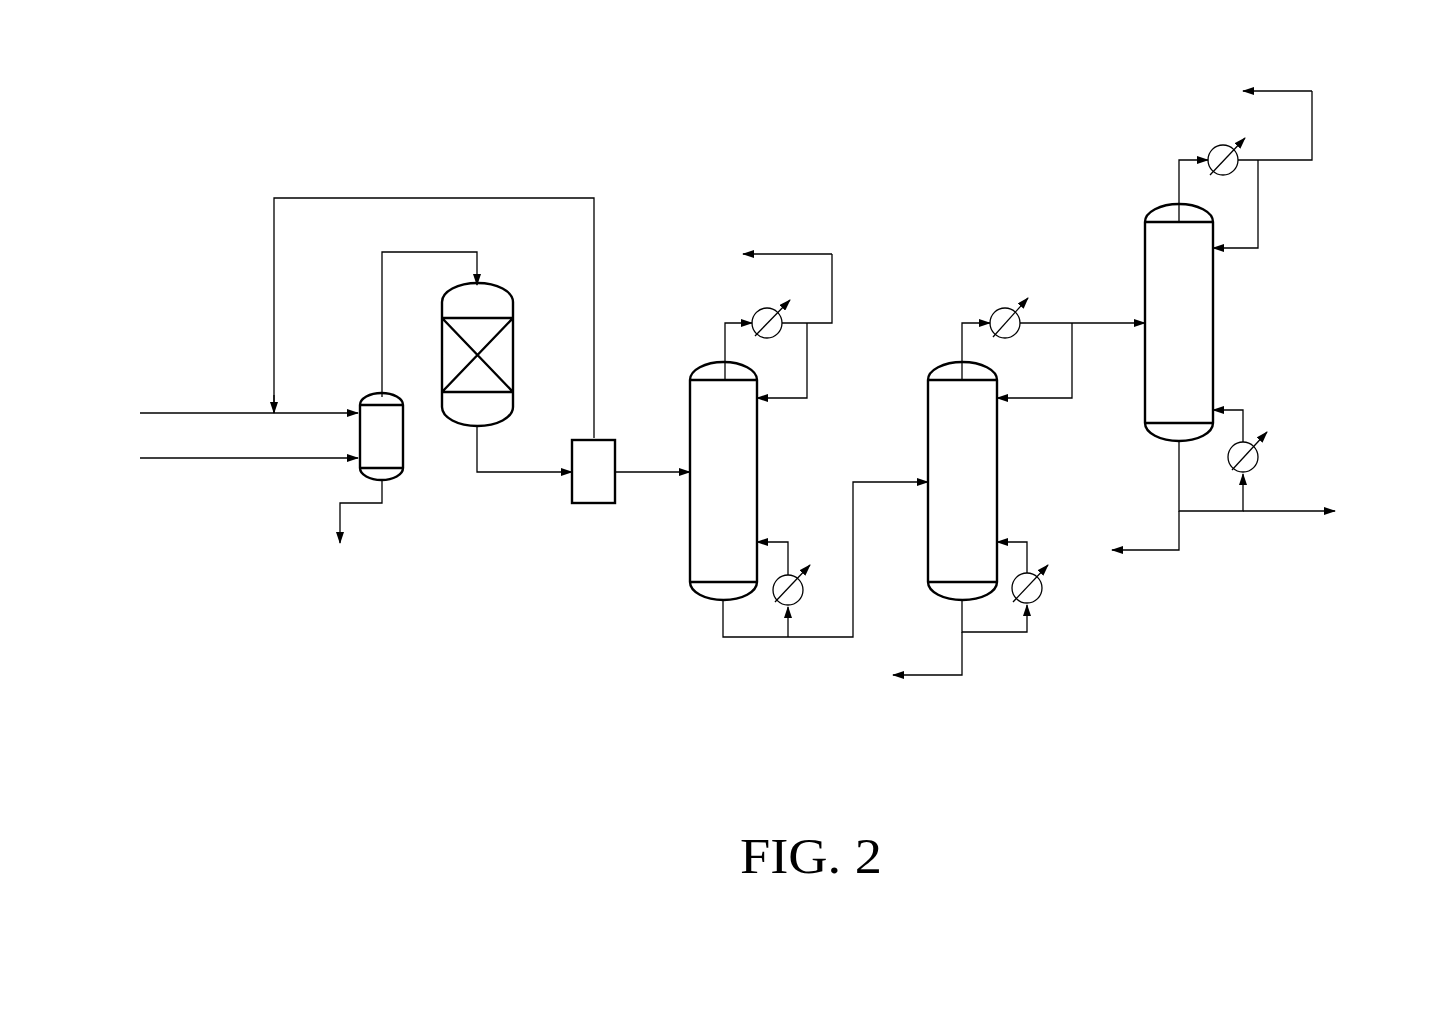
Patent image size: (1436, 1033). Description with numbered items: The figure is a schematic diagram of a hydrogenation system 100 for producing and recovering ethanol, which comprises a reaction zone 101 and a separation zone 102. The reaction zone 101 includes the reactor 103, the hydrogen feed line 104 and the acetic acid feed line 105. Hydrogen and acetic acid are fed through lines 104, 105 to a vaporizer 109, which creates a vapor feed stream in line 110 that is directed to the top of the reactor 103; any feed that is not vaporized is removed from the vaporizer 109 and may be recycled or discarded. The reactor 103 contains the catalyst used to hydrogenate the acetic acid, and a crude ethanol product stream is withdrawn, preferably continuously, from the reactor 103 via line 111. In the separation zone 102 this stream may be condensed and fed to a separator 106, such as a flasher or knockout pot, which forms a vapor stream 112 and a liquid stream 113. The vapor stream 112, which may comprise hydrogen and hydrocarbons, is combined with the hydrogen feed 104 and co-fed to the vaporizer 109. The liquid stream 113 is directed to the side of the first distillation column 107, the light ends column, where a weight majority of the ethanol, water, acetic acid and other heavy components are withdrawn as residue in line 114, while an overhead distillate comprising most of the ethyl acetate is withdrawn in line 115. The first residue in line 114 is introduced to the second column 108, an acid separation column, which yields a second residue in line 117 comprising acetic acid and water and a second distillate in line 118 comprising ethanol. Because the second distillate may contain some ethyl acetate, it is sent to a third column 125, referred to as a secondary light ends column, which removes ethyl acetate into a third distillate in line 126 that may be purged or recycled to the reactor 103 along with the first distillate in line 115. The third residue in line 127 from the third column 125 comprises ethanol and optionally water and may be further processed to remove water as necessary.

The hydrogenation system 100 is at (633, 108).
The reaction zone 101 is at (375, 675).
The separation zone 102 is at (1147, 752).
The reactor 103 is at (495, 303).
The hydrogen feed line 104 is at (220, 413).
The acetic acid feed line 105 is at (237, 460).
The separator 106 is at (607, 440).
The first distillation column 107 is at (733, 440).
The second column 108 is at (975, 472).
The vaporizer 109 is at (397, 473).
The vapor feed stream line 110 is at (405, 252).
The crude ethanol product line 111 is at (523, 472).
The vapor stream 112 is at (595, 218).
The liquid stream 113 is at (642, 472).
The first residue line 114 is at (818, 637).
The first distillate line 115 is at (825, 254).
The second residue line 117 is at (965, 658).
The second distillate line 118 is at (1047, 322).
The third column 125 is at (1193, 322).
The third distillate line 126 is at (1313, 118).
The third residue line 127 is at (1282, 511).